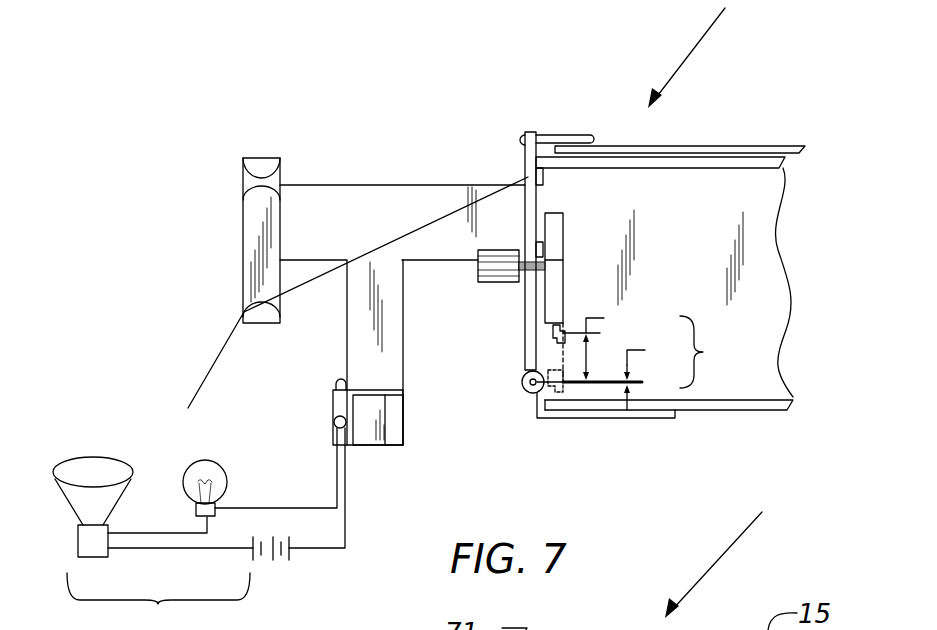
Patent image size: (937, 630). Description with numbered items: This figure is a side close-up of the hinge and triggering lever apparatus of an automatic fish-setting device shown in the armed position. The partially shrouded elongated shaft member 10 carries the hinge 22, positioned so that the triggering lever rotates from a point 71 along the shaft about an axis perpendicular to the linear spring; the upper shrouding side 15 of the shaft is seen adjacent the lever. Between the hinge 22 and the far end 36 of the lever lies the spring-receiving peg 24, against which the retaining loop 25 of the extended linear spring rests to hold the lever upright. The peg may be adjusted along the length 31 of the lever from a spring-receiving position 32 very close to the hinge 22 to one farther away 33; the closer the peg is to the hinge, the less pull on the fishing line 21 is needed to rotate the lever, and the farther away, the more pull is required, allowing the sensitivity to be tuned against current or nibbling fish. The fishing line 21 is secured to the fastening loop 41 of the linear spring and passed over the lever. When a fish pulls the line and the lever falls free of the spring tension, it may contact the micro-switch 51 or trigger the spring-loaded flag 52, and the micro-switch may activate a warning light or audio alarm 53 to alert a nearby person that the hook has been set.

The partially shrouded elongated shaft member 10 is at (730, 548).
The upper shrouding side 15 is at (720, 163).
The fishing line 21 is at (213, 366).
The hinge 22 is at (522, 392).
The spring-receiving peg 24 is at (563, 325).
The retaining loop 25 is at (543, 176).
The length of the triggering lever 31 is at (655, 359).
The spring-receiving position close to the hinge 32 is at (643, 383).
The spring-receiving position farther from the hinge 33 is at (610, 318).
The far end of the triggering lever 36 is at (478, 258).
The fastening loop 41 is at (565, 383).
The micro-switch 51 is at (335, 422).
The spring-loaded flag 52 is at (707, 146).
The warning light or audio warning alarm 53 is at (199, 529).
The point along the elongated shaft 71 is at (358, 238).